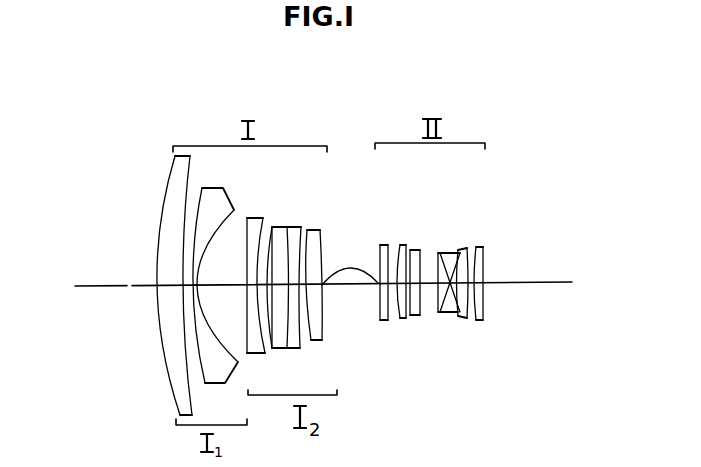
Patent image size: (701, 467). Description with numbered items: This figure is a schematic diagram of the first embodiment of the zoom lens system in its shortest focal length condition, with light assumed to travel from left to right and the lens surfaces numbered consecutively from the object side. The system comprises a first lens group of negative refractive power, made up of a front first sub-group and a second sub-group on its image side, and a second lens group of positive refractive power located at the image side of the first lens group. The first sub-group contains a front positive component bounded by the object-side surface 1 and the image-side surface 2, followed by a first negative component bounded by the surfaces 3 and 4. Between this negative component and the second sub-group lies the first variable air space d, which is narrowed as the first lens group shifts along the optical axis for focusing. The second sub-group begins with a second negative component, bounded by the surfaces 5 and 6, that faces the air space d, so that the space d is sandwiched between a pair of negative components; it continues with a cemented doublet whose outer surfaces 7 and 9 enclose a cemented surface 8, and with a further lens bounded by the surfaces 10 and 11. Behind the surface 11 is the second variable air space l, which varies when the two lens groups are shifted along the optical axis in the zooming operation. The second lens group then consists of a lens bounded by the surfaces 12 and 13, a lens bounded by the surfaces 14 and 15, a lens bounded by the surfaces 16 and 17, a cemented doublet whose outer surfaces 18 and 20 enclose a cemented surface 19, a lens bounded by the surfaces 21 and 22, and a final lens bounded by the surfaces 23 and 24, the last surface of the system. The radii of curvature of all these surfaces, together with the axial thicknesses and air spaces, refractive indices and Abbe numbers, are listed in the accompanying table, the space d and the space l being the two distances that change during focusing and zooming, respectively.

The object-side surface of front positive component 1 is at (141, 278).
The image-side surface of front positive component 2 is at (211, 291).
The object-side surface of first negative component 3 is at (212, 266).
The image-side surface of first negative component 4 is at (217, 286).
The object-side surface of second negative component 5 is at (234, 285).
The image-side surface of second negative component 6 is at (266, 308).
The object-side surface of cemented doublet in second sub-group 7 is at (265, 260).
The cemented surface of doublet in second sub-group 8 is at (288, 312).
The image-side surface of cemented doublet in second sub-group 9 is at (302, 260).
The object-side surface of rear lens of second sub-group 10 is at (326, 312).
The image-side surface of rear lens of second sub-group 11 is at (338, 256).
The object-side surface of first lens of second lens group 12 is at (356, 314).
The image-side surface of first lens of second lens group 13 is at (396, 244).
The object-side surface of second lens of second lens group 14 is at (394, 305).
The image-side surface of second lens of second lens group 15 is at (423, 234).
The object-side surface of third lens of second lens group 16 is at (428, 305).
The image-side surface of third lens of second lens group 17 is at (437, 253).
The object-side surface of cemented doublet in second lens group 18 is at (453, 308).
The cemented surface of doublet in second lens group 19 is at (461, 231).
The image-side surface of cemented doublet in second lens group 20 is at (479, 325).
The object-side surface of fifth lens of second lens group 21 is at (483, 233).
The image-side surface of fifth lens of second lens group 22 is at (506, 307).
The object-side surface of last lens 23 is at (501, 255).
The image-side surface of last lens 24 is at (534, 322).
The first variable air space d is at (247, 278).
The second variable air space l is at (350, 268).